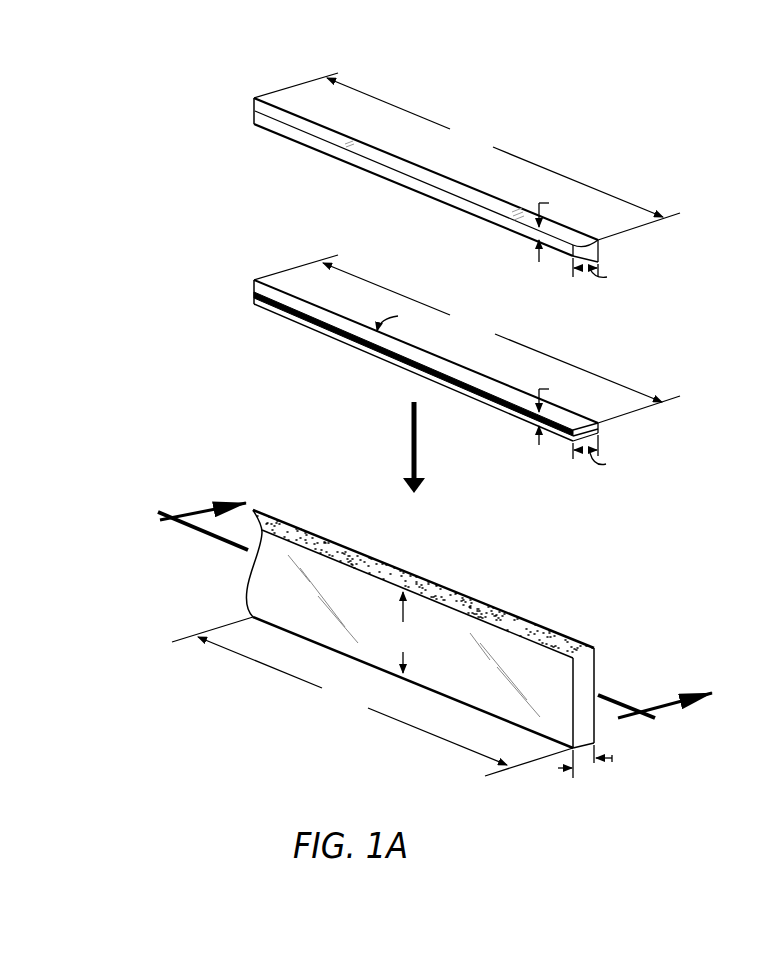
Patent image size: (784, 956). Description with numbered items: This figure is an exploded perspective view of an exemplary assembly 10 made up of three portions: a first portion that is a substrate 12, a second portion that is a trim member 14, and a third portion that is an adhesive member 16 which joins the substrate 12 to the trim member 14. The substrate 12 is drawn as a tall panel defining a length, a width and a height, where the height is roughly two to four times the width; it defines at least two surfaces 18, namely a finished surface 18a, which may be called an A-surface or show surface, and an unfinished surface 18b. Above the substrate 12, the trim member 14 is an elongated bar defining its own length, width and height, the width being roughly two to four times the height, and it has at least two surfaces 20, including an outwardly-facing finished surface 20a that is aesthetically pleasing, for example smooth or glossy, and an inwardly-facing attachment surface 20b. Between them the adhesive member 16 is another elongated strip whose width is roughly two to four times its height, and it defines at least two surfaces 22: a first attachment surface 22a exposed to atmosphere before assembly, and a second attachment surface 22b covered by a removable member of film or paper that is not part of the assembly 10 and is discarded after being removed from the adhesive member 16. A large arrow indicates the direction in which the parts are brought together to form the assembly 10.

The assembly 10 is at (727, 382).
The substrate 12 is at (426, 634).
The trim member 14 is at (441, 240).
The adhesive member 16 is at (441, 371).
The surfaces of the substrate 18 is at (207, 676).
The finished surface 18a is at (317, 627).
The unfinished surface 18b is at (327, 540).
The surfaces of the trim member 20 is at (190, 70).
The outwardly-facing finished surface 20a is at (272, 104).
The inwardly-facing attachment surface 20b is at (264, 131).
The surfaces of the adhesive member 22 is at (190, 265).
The first attachment surface 22a is at (268, 313).
The second attachment surface 22b is at (274, 298).